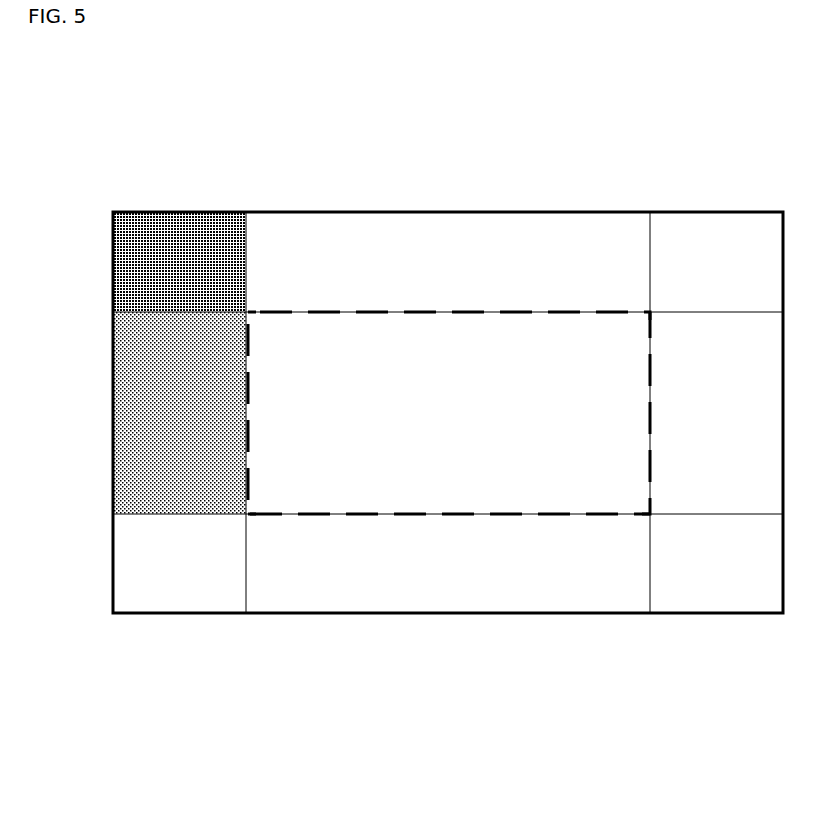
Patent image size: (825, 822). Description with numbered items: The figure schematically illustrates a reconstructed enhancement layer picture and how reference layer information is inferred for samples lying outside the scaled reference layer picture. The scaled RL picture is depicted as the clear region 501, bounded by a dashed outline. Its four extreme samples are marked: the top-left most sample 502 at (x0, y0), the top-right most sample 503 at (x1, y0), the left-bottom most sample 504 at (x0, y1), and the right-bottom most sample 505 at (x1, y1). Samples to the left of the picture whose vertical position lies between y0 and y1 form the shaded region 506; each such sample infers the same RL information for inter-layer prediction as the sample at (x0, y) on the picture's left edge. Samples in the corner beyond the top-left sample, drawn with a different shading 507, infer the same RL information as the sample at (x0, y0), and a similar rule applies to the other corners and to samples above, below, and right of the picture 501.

The scaled reference layer picture 501 is at (465, 422).
The top-left most sample 502 is at (248, 308).
The top-right most sample 503 is at (650, 312).
The left-bottom most sample 504 is at (257, 515).
The right-bottom most sample 505 is at (647, 515).
The shaded region 506 is at (112, 412).
The corner region with different shading 507 is at (112, 260).